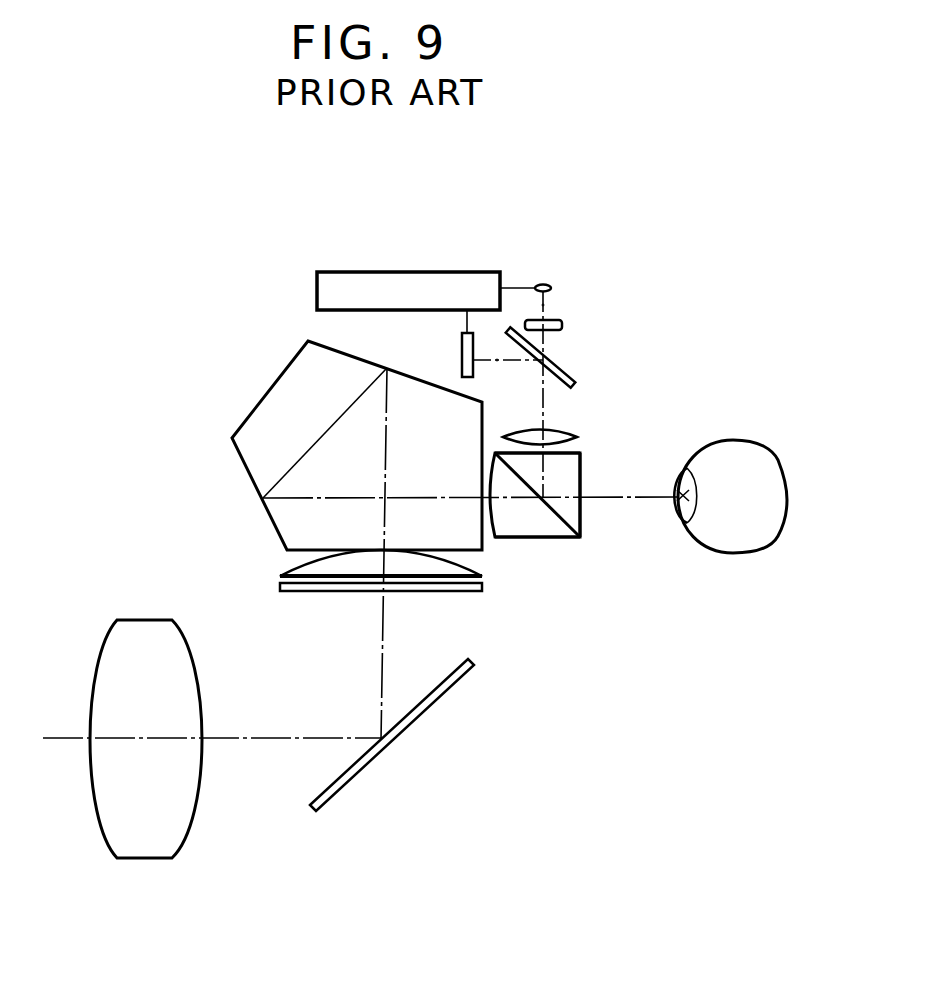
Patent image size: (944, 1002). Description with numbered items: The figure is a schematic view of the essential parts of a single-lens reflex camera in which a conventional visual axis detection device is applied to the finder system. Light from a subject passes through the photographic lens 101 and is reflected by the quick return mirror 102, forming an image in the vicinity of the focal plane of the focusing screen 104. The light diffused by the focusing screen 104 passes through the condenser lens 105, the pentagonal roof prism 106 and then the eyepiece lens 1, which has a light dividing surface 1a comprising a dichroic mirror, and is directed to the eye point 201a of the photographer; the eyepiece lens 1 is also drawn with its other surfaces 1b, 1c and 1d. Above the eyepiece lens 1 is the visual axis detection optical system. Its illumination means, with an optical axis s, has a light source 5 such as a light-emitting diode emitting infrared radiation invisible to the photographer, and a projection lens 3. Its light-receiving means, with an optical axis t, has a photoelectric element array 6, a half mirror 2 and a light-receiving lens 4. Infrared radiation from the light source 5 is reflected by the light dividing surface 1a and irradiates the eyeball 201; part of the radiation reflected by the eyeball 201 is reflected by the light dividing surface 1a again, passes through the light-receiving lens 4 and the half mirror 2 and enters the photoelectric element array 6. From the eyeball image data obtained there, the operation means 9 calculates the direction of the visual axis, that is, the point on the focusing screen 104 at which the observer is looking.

The eyepiece lens 1 is at (572, 514).
The light dividing surface 1a is at (560, 525).
The exit surface 1b is at (581, 518).
The bottom surface 1c is at (530, 539).
The top surface 1d is at (580, 451).
The half mirror 2 is at (573, 382).
The projection lens 3 is at (562, 325).
The light-receiving lens 4 is at (569, 428).
The light source 5 is at (550, 285).
The photoelectric element array 6 is at (462, 346).
The operation means 9 is at (403, 272).
The optical axis of the illumination means s is at (545, 305).
The optical axis of the light-receiving means t is at (494, 362).
The photographic lens 101 is at (141, 620).
The quick return mirror 102 is at (440, 698).
The focusing screen 104 is at (281, 589).
The condenser lens 105 is at (284, 572).
The pentagonal roof prism 106 is at (262, 396).
The eyeball 201 is at (724, 498).
The eye point 201a is at (684, 502).